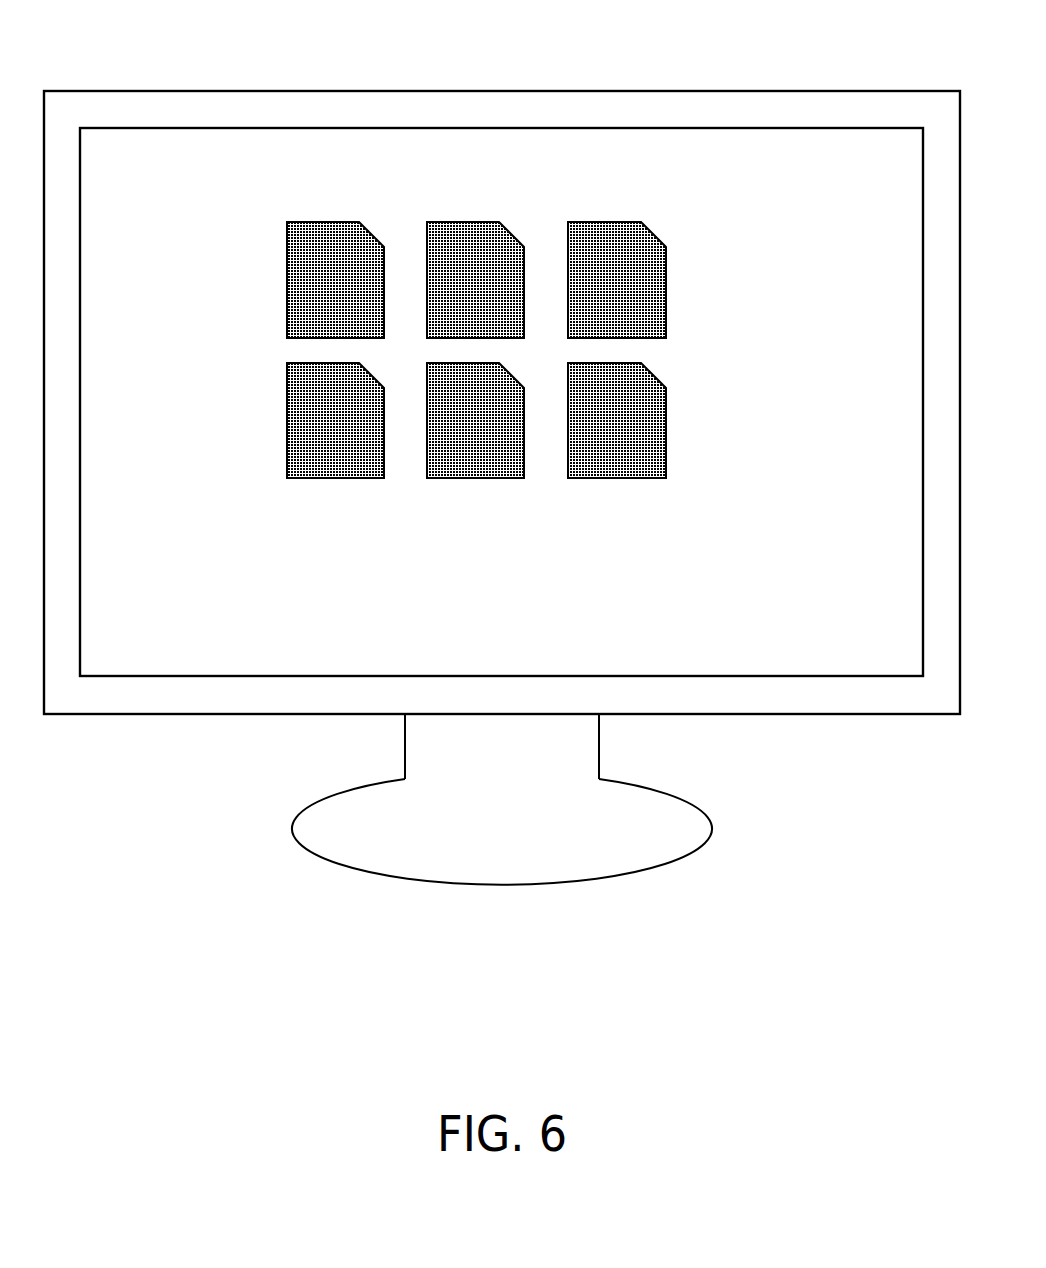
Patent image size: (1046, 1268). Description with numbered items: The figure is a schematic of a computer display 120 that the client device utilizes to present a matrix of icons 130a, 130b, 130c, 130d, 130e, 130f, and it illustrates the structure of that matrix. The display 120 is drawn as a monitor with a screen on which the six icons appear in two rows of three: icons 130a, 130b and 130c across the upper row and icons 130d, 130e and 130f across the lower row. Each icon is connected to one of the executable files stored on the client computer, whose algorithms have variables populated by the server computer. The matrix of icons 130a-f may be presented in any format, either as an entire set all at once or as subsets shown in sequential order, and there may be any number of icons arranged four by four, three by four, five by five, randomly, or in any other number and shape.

The display 120 is at (743, 91).
The icon 130a is at (286, 246).
The icon 130b is at (425, 246).
The icon 130c is at (567, 248).
The icon 130d is at (287, 465).
The icon 130e is at (438, 478).
The icon 130f is at (574, 478).